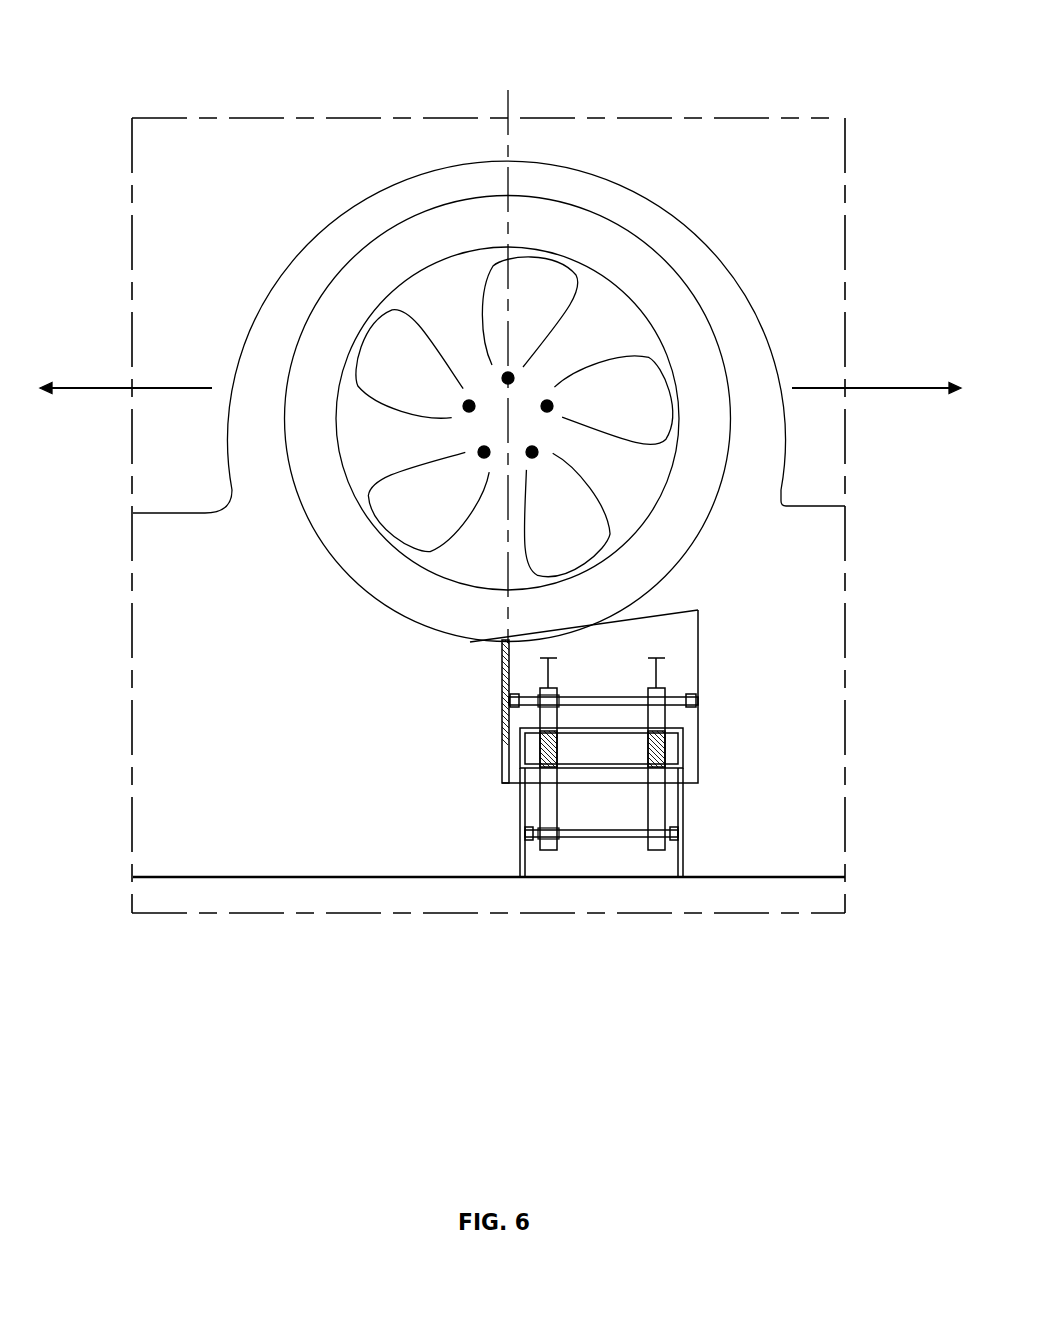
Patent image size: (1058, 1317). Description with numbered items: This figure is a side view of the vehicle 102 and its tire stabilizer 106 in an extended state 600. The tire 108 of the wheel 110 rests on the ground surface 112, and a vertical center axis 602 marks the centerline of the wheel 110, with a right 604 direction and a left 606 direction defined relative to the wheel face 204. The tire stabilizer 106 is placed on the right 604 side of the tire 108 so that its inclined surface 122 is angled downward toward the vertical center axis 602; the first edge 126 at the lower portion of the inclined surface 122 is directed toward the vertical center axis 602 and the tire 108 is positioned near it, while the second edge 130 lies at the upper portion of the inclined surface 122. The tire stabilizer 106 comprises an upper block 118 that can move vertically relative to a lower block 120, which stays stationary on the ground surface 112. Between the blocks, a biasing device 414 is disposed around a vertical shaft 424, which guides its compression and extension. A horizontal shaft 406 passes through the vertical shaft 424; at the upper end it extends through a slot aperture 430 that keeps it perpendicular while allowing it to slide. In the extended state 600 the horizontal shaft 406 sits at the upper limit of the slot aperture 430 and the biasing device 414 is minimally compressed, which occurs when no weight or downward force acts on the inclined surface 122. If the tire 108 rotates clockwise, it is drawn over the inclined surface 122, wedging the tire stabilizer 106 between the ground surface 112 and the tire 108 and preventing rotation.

The extended state 600 is at (844, 64).
The vertical center axis 602 is at (508, 103).
The right direction 604 is at (893, 368).
The left direction 606 is at (145, 368).
The vehicle 102 is at (210, 238).
The tire 108 is at (322, 480).
The wheel 110 is at (418, 443).
The wheel face 204 is at (585, 349).
The ground surface 112 is at (408, 907).
The inclined surface 122 is at (671, 608).
The first edge 126 is at (508, 640).
The second edge 130 is at (698, 609).
The upper block 118 is at (680, 643).
The slot aperture 430 is at (665, 695).
The vertical shaft 424 is at (653, 838).
The tire stabilizer 106 is at (690, 768).
The biasing device 414 is at (643, 757).
The lower block 120 is at (668, 863).
The horizontal shaft 406 is at (583, 833).